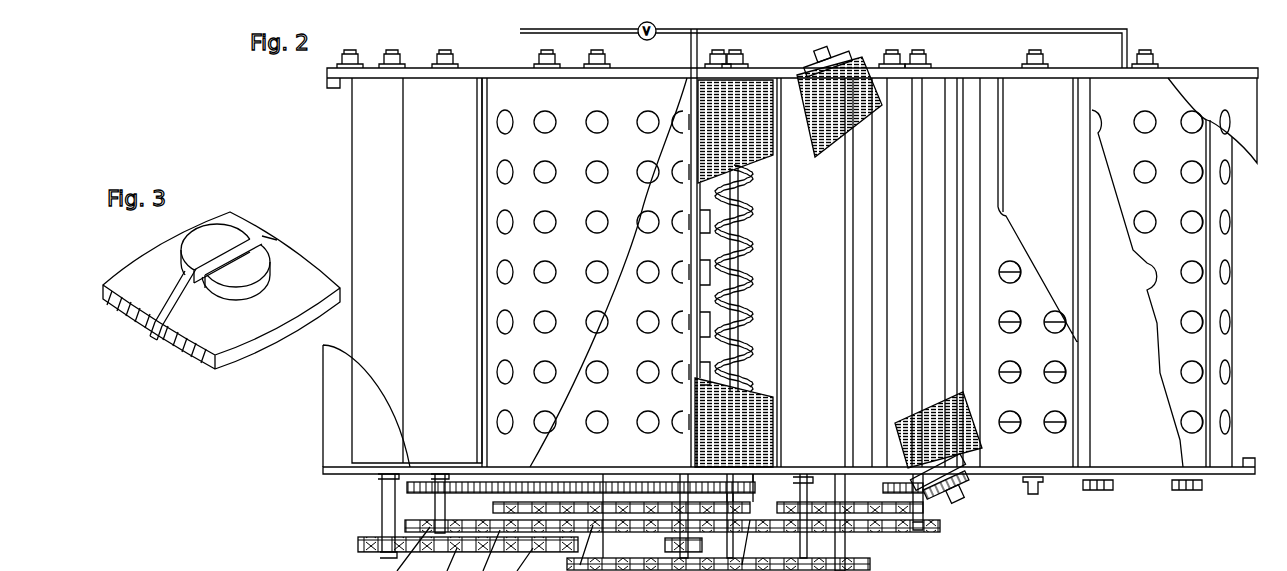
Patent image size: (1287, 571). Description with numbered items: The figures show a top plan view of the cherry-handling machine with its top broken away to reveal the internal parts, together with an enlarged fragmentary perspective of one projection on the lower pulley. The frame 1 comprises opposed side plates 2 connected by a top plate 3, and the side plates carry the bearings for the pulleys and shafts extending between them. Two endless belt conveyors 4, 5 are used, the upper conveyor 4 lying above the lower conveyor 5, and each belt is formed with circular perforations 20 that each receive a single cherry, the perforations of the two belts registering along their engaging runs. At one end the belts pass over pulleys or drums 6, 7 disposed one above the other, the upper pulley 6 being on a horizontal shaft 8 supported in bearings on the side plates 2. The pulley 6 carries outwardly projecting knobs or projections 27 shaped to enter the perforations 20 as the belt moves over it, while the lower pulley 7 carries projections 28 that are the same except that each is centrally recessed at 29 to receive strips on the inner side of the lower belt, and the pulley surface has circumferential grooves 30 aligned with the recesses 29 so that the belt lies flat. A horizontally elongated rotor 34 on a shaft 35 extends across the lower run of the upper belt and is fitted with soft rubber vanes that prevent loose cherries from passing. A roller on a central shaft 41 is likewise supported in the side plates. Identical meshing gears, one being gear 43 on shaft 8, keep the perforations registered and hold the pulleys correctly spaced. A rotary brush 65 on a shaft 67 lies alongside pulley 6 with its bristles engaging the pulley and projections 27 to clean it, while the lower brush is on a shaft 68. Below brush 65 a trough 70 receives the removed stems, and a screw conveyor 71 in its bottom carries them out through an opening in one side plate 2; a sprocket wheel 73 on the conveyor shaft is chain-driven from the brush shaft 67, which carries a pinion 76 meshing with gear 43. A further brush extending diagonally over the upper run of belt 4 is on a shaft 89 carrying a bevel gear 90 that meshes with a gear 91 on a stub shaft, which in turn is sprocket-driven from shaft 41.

In FIG. 2, the frame 1 is at (1203, 60).
In FIG. 2, the side plates 2 is at (989, 70).
In FIG. 2, the top plate 3 is at (362, 440).
In FIG. 2, the upper endless belt conveyor 4 is at (1110, 95).
In FIG. 2, the lower endless belt conveyor 5 is at (988, 283).
In FIG. 2, the upper pulley or drum 6 is at (673, 247).
In FIG. 3, the lower pulley or drum 7 is at (251, 360).
In FIG. 2, the horizontal shaft 8 is at (597, 548).
In FIG. 2, the circular perforations 20 is at (590, 167).
In FIG. 2, the projections 27 is at (640, 378).
In FIG. 3, the projections 28 is at (213, 235).
In FIG. 3, the central recess 29 is at (237, 242).
In FIG. 3, the circumferential grooves 30 is at (170, 307).
In FIG. 2, the rotor 34 is at (903, 330).
In FIG. 2, the rotor shaft 35 is at (920, 532).
In FIG. 2, the central shaft 41 is at (803, 537).
In FIG. 2, the gear 43 is at (618, 487).
In FIG. 2, the rotary brush 65 is at (766, 420).
In FIG. 2, the brush shaft 67 is at (735, 498).
In FIG. 2, the brush shaft 68 is at (683, 535).
In FIG. 2, the trough 70 is at (781, 183).
In FIG. 2, the screw conveyor 71 is at (743, 185).
In FIG. 2, the sprocket wheel 73 is at (733, 510).
In FIG. 2, the pinion 76 is at (755, 484).
In FIG. 2, the brush shaft 89 is at (957, 497).
In FIG. 2, the bevel gear 90 is at (968, 486).
In FIG. 2, the gear 91 is at (925, 500).